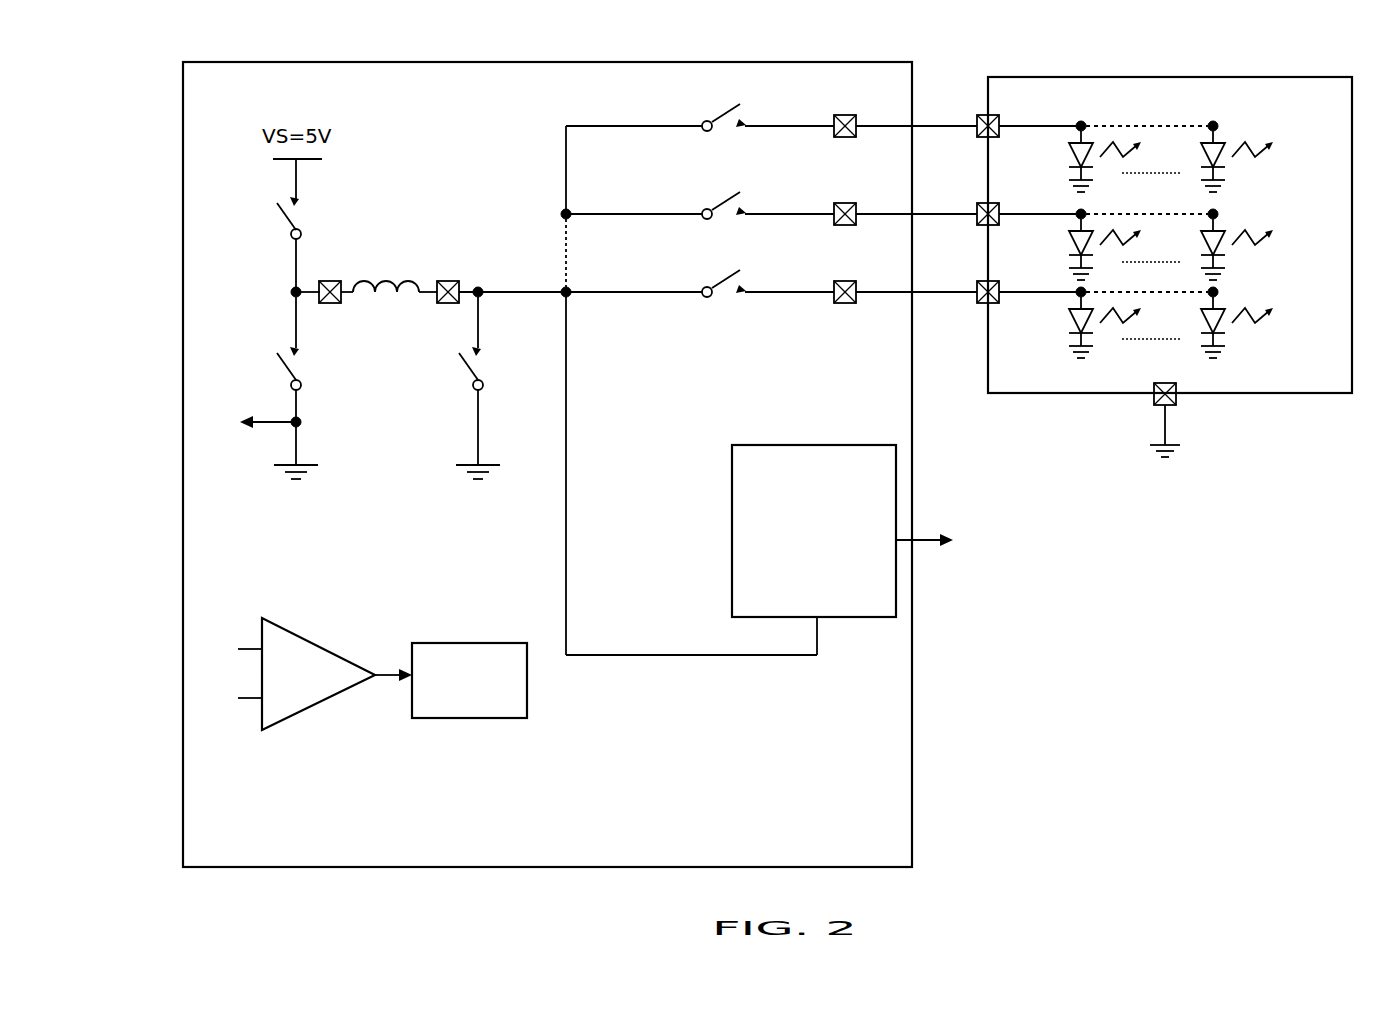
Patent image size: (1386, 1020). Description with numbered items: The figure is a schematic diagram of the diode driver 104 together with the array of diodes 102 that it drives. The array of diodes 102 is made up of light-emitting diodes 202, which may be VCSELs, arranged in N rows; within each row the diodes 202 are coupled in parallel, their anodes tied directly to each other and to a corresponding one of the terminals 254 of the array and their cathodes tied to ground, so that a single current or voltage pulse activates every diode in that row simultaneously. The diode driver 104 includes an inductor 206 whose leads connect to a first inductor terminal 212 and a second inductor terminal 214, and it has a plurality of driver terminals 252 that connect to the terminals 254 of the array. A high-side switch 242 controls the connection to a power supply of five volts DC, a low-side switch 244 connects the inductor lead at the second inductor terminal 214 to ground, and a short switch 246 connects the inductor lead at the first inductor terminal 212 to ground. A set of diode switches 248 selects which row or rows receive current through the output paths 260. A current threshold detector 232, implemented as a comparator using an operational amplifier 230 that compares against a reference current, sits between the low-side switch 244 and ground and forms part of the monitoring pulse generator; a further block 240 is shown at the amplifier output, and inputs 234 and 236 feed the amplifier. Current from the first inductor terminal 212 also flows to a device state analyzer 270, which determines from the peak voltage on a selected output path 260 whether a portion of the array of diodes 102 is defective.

The array of diodes 102 is at (1247, 73).
The diode driver 104 is at (301, 58).
The light-emitting diodes 202 is at (1207, 253).
The inductor 206 is at (388, 282).
The first inductor terminal 212 is at (456, 278).
The second inductor terminal 214 is at (332, 280).
The operational amplifier 230 is at (337, 674).
The current threshold detector 232 is at (249, 425).
The amplifier input 234 is at (228, 649).
The amplifier input 236 is at (228, 698).
The analog-to-digital converter 240 is at (469, 680).
The high-side switch 242 is at (316, 225).
The low-side switch 244 is at (314, 388).
The short switch 246 is at (497, 388).
The diode switches 248 is at (768, 228).
The driver terminals 252 is at (903, 185).
The terminals 254 is at (1086, 260).
The output paths 260 is at (646, 368).
The device state analyzer 270 is at (842, 531).